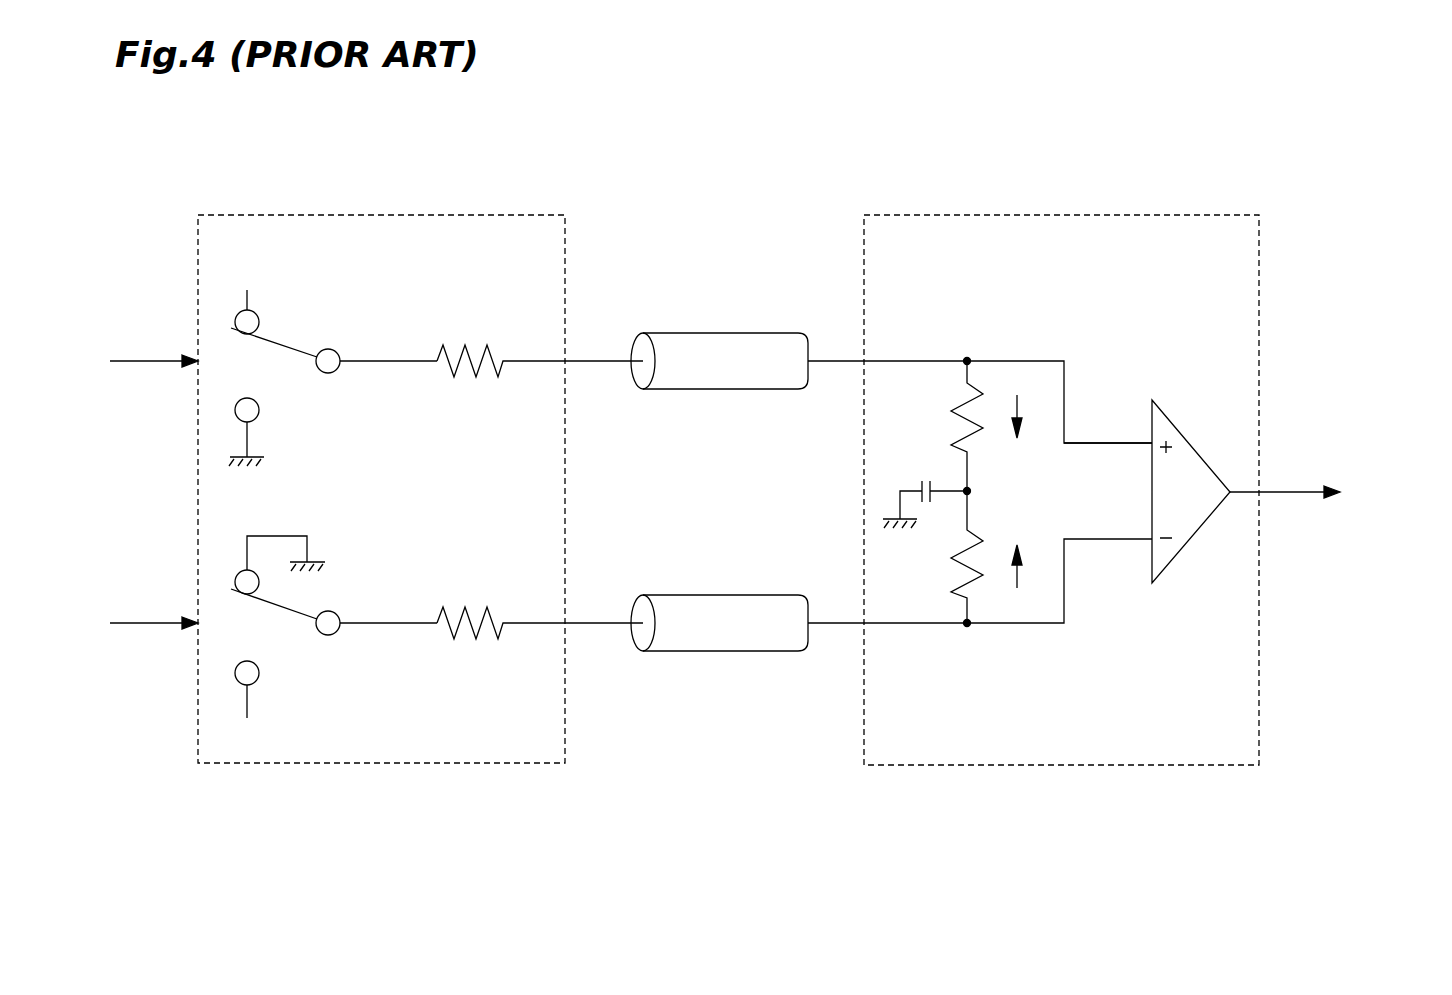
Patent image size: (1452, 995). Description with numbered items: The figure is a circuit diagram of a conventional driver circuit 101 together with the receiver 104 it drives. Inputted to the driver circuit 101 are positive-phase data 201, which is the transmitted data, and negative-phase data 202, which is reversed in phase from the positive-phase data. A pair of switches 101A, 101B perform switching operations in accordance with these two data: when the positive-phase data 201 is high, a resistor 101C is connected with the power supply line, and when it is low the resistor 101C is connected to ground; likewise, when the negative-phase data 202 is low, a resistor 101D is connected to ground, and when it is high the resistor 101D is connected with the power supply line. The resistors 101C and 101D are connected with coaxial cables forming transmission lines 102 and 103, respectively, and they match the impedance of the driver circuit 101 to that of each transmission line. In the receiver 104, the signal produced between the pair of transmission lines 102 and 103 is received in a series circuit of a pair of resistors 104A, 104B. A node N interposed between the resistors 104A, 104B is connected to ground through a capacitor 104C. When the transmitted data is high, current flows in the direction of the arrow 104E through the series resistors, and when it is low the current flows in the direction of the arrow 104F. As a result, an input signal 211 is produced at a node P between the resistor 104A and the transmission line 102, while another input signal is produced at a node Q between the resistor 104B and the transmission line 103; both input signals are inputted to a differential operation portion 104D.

The positive-phase data 201 is at (127, 361).
The negative-phase data 202 is at (130, 623).
The driver circuit 101 is at (510, 215).
The switch 101A is at (275, 383).
The switch 101B is at (275, 645).
The resistor 101C is at (467, 348).
The resistor 101D is at (467, 610).
The transmission line 102 is at (726, 345).
The transmission line 103 is at (713, 613).
The receiver 104 is at (1077, 215).
The resistor 104A is at (955, 413).
The resistor 104B is at (955, 562).
The capacitor 104C is at (921, 480).
The differential operation portion 104D is at (1183, 435).
The arrow 104E is at (1020, 405).
The arrow 104F is at (1018, 577).
The input signal 211 is at (1098, 443).
The node P is at (967, 361).
The node N is at (967, 491).
The node Q is at (967, 623).